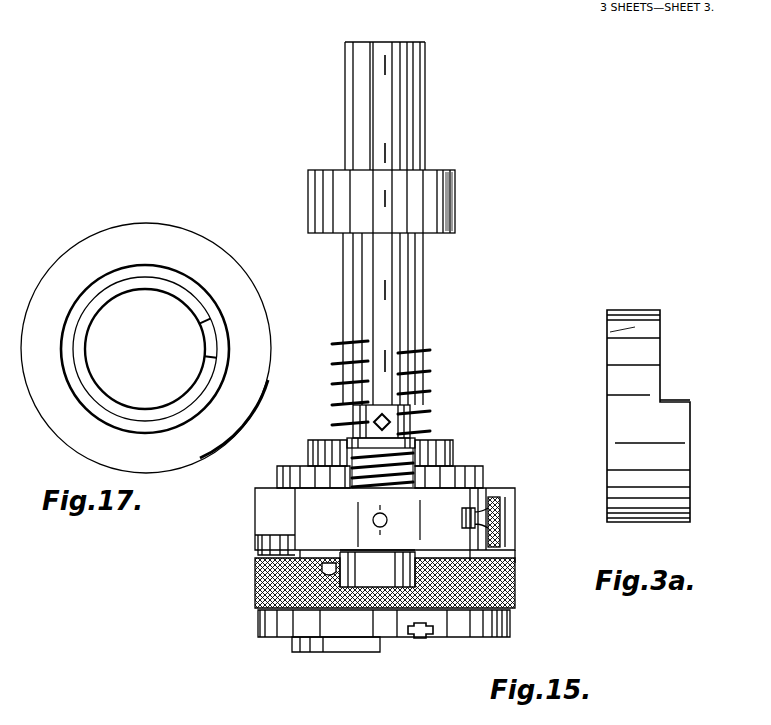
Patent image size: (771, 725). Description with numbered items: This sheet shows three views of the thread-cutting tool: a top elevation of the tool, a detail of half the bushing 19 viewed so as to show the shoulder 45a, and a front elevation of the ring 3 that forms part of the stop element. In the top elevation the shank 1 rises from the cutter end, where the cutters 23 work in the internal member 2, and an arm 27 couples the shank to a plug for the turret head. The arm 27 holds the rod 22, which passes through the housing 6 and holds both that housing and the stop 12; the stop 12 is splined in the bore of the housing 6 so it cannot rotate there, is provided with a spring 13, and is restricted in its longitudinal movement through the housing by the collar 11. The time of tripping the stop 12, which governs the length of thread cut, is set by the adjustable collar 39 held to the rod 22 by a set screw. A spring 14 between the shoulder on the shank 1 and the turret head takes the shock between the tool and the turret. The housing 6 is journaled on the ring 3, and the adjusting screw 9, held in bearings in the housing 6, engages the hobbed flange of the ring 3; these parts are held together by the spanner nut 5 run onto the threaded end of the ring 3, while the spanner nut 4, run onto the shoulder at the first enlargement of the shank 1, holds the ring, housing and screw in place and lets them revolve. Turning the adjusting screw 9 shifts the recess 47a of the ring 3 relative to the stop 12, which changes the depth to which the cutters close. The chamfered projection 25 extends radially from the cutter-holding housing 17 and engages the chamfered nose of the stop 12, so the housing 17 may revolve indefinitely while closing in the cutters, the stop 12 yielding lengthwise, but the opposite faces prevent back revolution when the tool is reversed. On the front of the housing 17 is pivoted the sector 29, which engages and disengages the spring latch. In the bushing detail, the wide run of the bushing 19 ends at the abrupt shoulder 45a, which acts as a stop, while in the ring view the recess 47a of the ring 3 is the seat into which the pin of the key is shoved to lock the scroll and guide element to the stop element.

In FIG. 15, the shank 1 is at (403, 327).
In FIG. 15, the internal member 2 is at (209, 714).
In FIG. 17, the ring 3 is at (158, 238).
In FIG. 15, the spanner nut 4 is at (328, 450).
In FIG. 15, the spanner nut 5 is at (300, 470).
In FIG. 15, the housing 6 is at (355, 520).
In FIG. 15, the adjusting screw 9 is at (497, 497).
In FIG. 15, the collar 11 is at (400, 443).
In FIG. 15, the stop 12 is at (397, 612).
In FIG. 15, the spring 13 is at (447, 440).
In FIG. 15, the spring 14 is at (428, 370).
In FIG. 15, the housing 17 is at (517, 608).
In FIG. 3A, the bushing 19 is at (632, 322).
In FIG. 15, the rod 22 is at (383, 298).
In FIG. 15, the cutters 23 is at (430, 640).
In FIG. 15, the chamfered projection 25 is at (255, 595).
In FIG. 15, the arm 27 is at (452, 187).
In FIG. 15, the sector 29 is at (318, 652).
In FIG. 15, the adjustable collar 39 is at (418, 405).
In FIG. 3A, the shoulder 45a is at (678, 400).
In FIG. 17, the recess 47a is at (218, 340).